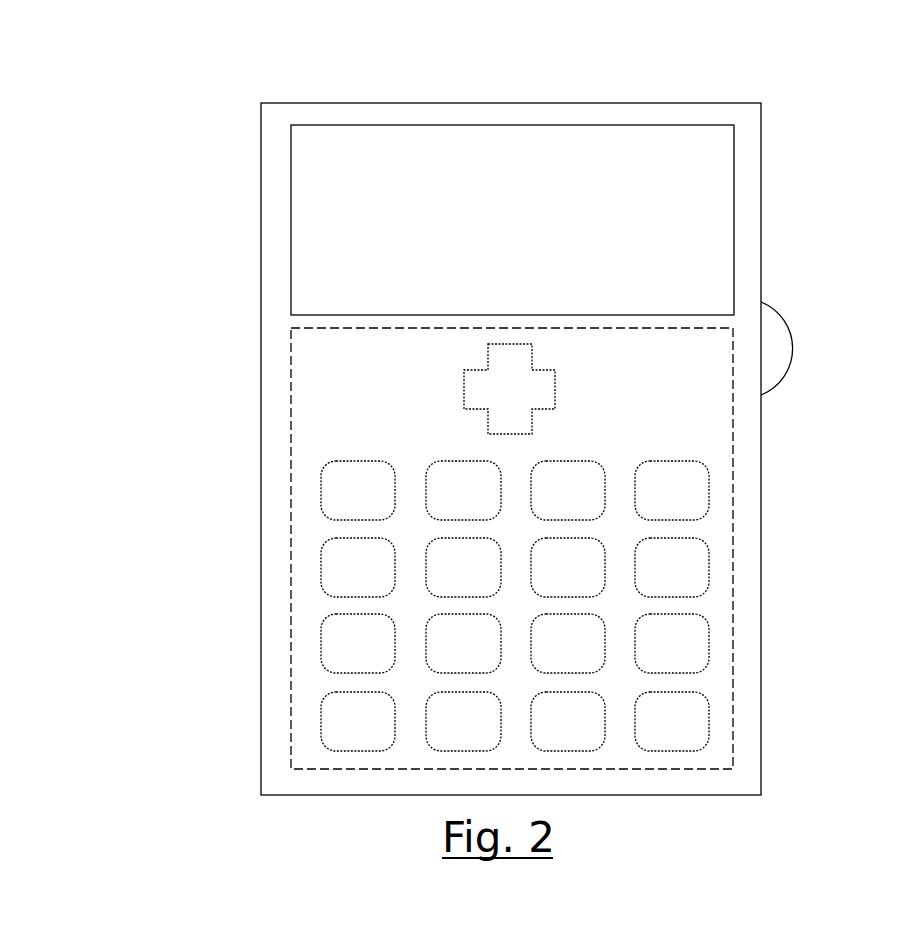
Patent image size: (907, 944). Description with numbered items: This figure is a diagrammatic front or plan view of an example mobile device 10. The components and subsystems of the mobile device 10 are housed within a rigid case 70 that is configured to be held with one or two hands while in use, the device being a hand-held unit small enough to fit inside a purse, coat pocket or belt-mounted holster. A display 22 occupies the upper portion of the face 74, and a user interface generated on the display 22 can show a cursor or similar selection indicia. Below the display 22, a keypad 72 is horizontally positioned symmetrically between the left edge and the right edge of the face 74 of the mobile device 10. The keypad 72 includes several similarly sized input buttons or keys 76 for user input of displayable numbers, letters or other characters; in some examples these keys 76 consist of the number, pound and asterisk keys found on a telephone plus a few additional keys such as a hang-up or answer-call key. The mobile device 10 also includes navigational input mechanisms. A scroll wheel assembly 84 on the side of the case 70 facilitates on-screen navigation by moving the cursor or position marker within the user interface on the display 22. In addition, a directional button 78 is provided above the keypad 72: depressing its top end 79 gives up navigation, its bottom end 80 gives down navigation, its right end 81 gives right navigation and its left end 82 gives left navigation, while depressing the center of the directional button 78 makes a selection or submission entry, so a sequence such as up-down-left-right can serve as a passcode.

The mobile device 10 is at (676, 90).
The display 22 is at (534, 234).
The rigid case 70 is at (455, 103).
The keypad 72 is at (735, 556).
The face 74 is at (276, 450).
The keys 76 is at (446, 480).
The directional button 78 is at (487, 368).
The top end 79 is at (515, 358).
The bottom end 80 is at (520, 420).
The right end 81 is at (548, 393).
The left end 82 is at (472, 395).
The scroll wheel assembly 84 is at (790, 316).